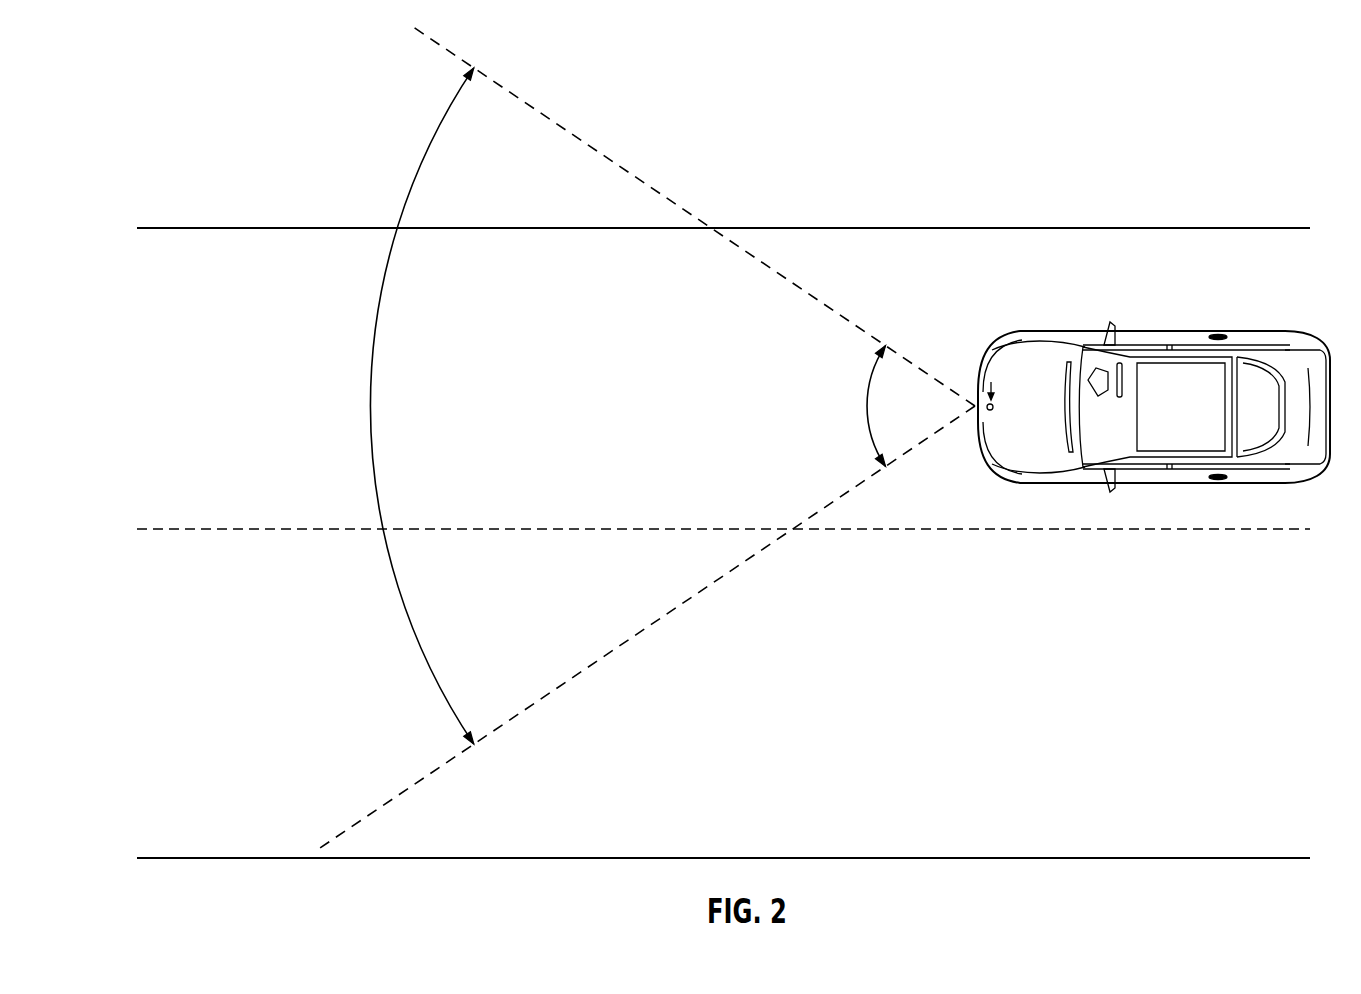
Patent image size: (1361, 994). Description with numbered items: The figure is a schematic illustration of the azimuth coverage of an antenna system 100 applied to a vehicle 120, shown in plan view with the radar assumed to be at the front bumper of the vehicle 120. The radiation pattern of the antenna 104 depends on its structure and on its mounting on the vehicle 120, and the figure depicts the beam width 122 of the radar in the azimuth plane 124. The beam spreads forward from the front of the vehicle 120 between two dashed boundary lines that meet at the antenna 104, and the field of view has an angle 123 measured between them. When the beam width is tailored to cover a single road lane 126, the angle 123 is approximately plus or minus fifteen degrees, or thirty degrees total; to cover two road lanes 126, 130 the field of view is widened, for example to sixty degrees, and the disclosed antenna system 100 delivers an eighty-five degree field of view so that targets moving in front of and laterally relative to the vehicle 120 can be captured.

The antenna system 100 is at (984, 374).
The antenna 104 is at (974, 408).
The vehicle 120 is at (1152, 333).
The beam width 122 is at (372, 409).
The angle 123 is at (867, 408).
The azimuth plane 124 is at (232, 135).
The road lane 126 is at (232, 392).
The road lane 130 is at (232, 708).